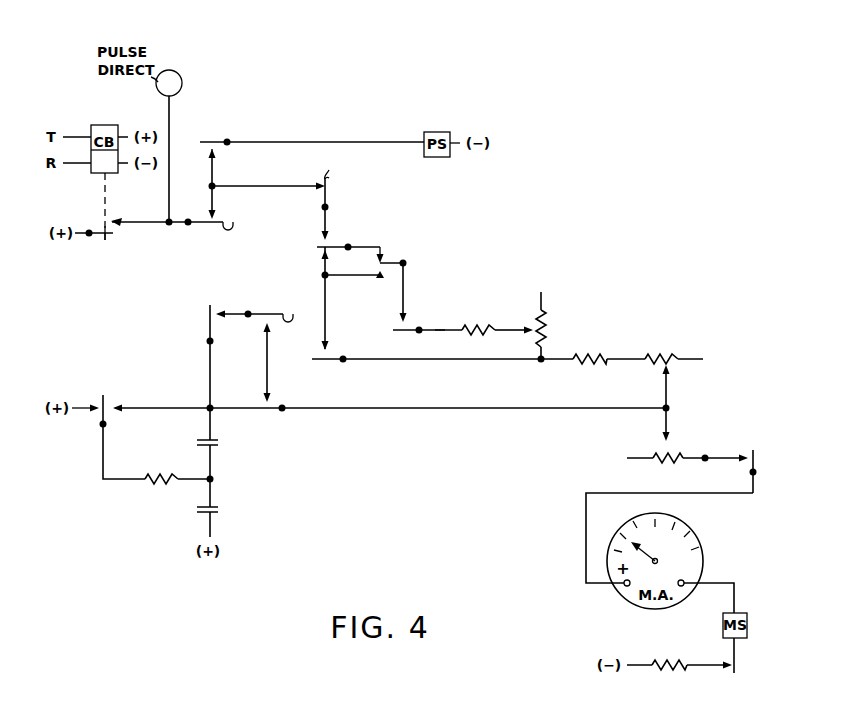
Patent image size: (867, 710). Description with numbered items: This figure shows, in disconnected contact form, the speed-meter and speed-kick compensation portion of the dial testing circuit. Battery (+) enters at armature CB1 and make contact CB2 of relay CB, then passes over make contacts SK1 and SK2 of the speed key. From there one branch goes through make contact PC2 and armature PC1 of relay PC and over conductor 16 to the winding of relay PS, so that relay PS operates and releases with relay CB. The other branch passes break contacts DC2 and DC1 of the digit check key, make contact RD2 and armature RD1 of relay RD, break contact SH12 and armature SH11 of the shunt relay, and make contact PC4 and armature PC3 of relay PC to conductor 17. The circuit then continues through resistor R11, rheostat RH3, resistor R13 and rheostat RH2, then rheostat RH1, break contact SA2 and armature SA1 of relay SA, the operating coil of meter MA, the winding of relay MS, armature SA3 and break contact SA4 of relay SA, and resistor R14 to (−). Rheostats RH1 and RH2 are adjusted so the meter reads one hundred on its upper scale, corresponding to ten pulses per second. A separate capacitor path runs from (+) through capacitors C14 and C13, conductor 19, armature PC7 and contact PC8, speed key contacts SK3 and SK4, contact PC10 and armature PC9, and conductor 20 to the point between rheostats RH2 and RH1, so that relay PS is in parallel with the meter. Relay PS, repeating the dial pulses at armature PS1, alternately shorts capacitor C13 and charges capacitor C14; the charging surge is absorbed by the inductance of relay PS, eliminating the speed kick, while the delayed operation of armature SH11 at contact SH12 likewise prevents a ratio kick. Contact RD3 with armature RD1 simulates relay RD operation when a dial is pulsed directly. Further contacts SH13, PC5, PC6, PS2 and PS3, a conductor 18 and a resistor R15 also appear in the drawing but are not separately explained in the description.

The armature CB1 is at (109, 236).
The make contact CB2 is at (116, 225).
The make contact SK1 is at (205, 224).
The make contact SK2 is at (216, 214).
The armature PC1 is at (206, 141).
The make contact PC2 is at (215, 150).
The conductor 16 is at (333, 142).
The break contact DC1 is at (330, 193).
The break contact DC2 is at (322, 191).
The armature RD1 is at (338, 248).
The make contact RD2 is at (319, 238).
The contact RD3 is at (319, 256).
The armature SH11 is at (404, 260).
The break contact SH12 is at (379, 262).
The shunt relay contact SH13 is at (385, 275).
The armature PC3 is at (400, 333).
The make contact PC4 is at (398, 320).
The pulse contact PC5 is at (322, 362).
The pulse contact PC6 is at (328, 353).
The conductor 17 is at (433, 330).
The resistor R11 is at (478, 327).
The rheostat RH3 is at (548, 319).
The conductor 18 is at (450, 360).
The resistor R13 is at (585, 356).
The rheostat RH2 is at (662, 356).
The conductor 20 is at (440, 409).
The armature PC9 is at (268, 410).
The make contact PC10 is at (265, 400).
The rheostat RH1 is at (672, 456).
The armature SA1 is at (758, 458).
The break contact SA2 is at (750, 471).
The armature SA3 is at (738, 660).
The break contact SA4 is at (731, 671).
The resistor R14 is at (673, 661).
The conductor 19 is at (208, 367).
The armature PC7 is at (208, 322).
The make contact PC8 is at (223, 309).
The speed key contact SK3 is at (262, 314).
The speed key contact SK4 is at (263, 331).
The armature PS1 is at (108, 414).
The polarity switch contact PS2 is at (98, 400).
The polarity switch contact PS3 is at (118, 405).
The resistor R15 is at (160, 488).
The capacitor C13 is at (220, 447).
The capacitor C14 is at (220, 508).